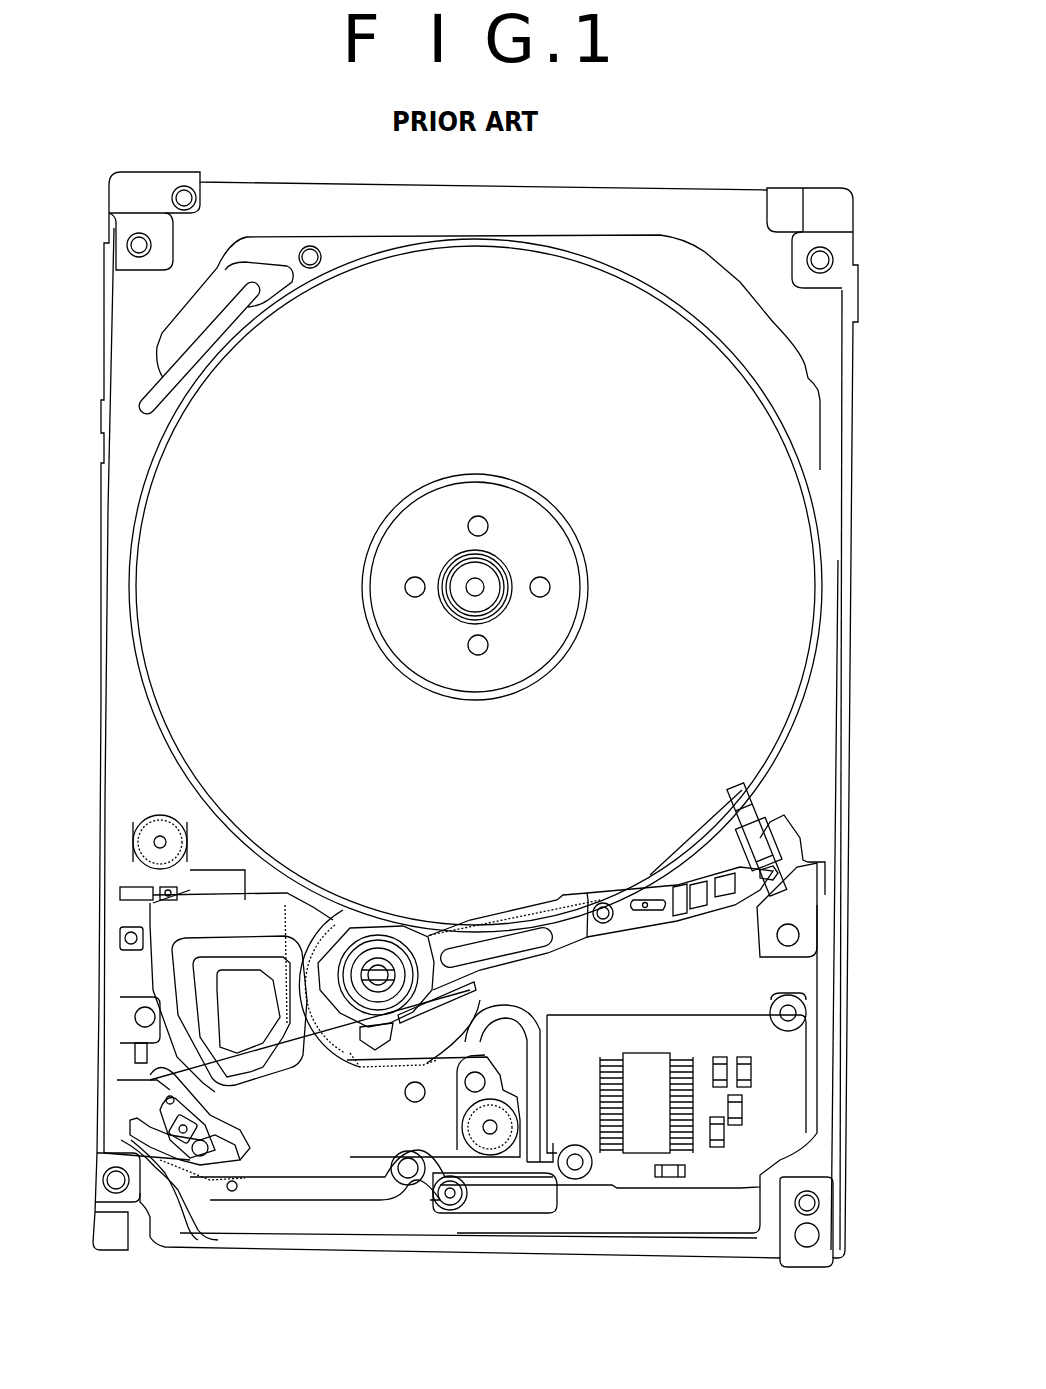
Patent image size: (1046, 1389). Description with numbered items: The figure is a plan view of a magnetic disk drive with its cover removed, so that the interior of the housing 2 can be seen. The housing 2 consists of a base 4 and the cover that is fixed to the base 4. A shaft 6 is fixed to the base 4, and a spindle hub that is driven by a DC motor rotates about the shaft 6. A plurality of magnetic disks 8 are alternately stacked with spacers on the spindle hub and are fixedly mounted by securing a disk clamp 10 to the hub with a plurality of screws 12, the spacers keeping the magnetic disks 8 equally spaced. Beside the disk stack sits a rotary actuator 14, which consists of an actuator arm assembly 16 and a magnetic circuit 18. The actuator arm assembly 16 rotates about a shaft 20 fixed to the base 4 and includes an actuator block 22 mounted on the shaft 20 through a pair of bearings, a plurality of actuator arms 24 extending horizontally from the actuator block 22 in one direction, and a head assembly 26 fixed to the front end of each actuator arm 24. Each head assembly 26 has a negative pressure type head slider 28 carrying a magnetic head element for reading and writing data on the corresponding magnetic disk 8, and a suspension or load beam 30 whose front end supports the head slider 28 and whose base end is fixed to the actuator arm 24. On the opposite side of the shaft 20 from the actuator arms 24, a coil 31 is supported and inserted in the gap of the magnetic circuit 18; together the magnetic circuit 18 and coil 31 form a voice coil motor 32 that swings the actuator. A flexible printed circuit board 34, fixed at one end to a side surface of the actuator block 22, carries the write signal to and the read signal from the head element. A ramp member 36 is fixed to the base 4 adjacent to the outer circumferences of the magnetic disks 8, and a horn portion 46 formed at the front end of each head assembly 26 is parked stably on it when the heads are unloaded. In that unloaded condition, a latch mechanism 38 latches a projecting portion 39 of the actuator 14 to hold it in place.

The housing 2 is at (560, 182).
The base 4 is at (834, 420).
The shaft 6 is at (490, 580).
The magnetic disk 8 is at (800, 612).
The disk clamp 10 is at (486, 549).
The screws 12 is at (405, 590).
The rotary actuator 14 is at (601, 928).
The actuator arm assembly 16 is at (500, 908).
The magnetic circuit 18 is at (353, 1167).
The shaft 20 is at (385, 957).
The actuator block 22 is at (393, 1030).
The actuator arm 24 is at (548, 955).
The head assembly 26 is at (662, 878).
The head slider 28 is at (740, 893).
The suspension (load beam) 30 is at (690, 905).
The coil 31 is at (242, 960).
The voice coil motor (VCM) 32 is at (167, 1050).
The flexible printed circuit board (FPC) 34 is at (540, 1043).
The ramp member 36 is at (735, 782).
The latch mechanism 38 is at (215, 1185).
The projecting portion 39 is at (245, 1150).
The horn portion 46 is at (778, 874).